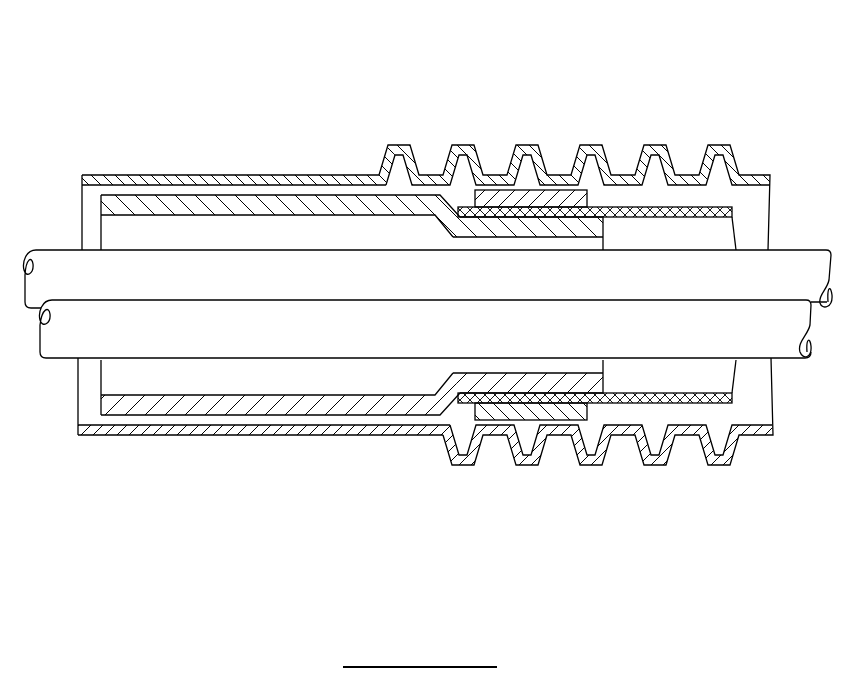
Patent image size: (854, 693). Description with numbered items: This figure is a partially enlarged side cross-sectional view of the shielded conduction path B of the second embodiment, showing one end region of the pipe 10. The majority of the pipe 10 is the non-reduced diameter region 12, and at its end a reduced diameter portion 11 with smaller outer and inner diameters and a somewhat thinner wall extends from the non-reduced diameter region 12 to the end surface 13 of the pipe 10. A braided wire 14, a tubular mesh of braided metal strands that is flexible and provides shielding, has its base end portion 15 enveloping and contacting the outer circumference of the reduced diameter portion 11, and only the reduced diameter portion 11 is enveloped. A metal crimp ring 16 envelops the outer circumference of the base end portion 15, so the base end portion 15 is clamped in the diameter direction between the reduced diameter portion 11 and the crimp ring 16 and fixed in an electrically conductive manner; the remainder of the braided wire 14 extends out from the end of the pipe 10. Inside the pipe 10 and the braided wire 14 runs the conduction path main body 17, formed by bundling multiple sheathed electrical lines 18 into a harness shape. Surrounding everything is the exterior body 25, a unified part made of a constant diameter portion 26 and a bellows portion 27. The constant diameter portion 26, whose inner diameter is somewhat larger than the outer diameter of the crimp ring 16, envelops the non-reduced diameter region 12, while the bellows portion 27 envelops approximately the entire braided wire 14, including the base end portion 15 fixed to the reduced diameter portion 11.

The shielded conduction path B is at (762, 53).
The pipe 10 is at (334, 176).
The reduced diameter portion 11 is at (562, 228).
The non-reduced diameter region 12 is at (247, 205).
The end surface 13 is at (603, 385).
The braided wire 14 is at (708, 208).
The base end portion 15 is at (529, 212).
The crimp ring 16 is at (535, 416).
The conduction path main body 17 is at (110, 97).
The sheathed electrical line 18 is at (170, 327).
The exterior body 25 is at (595, 112).
The constant diameter portion 26 is at (308, 433).
The bellows portion 27 is at (592, 468).